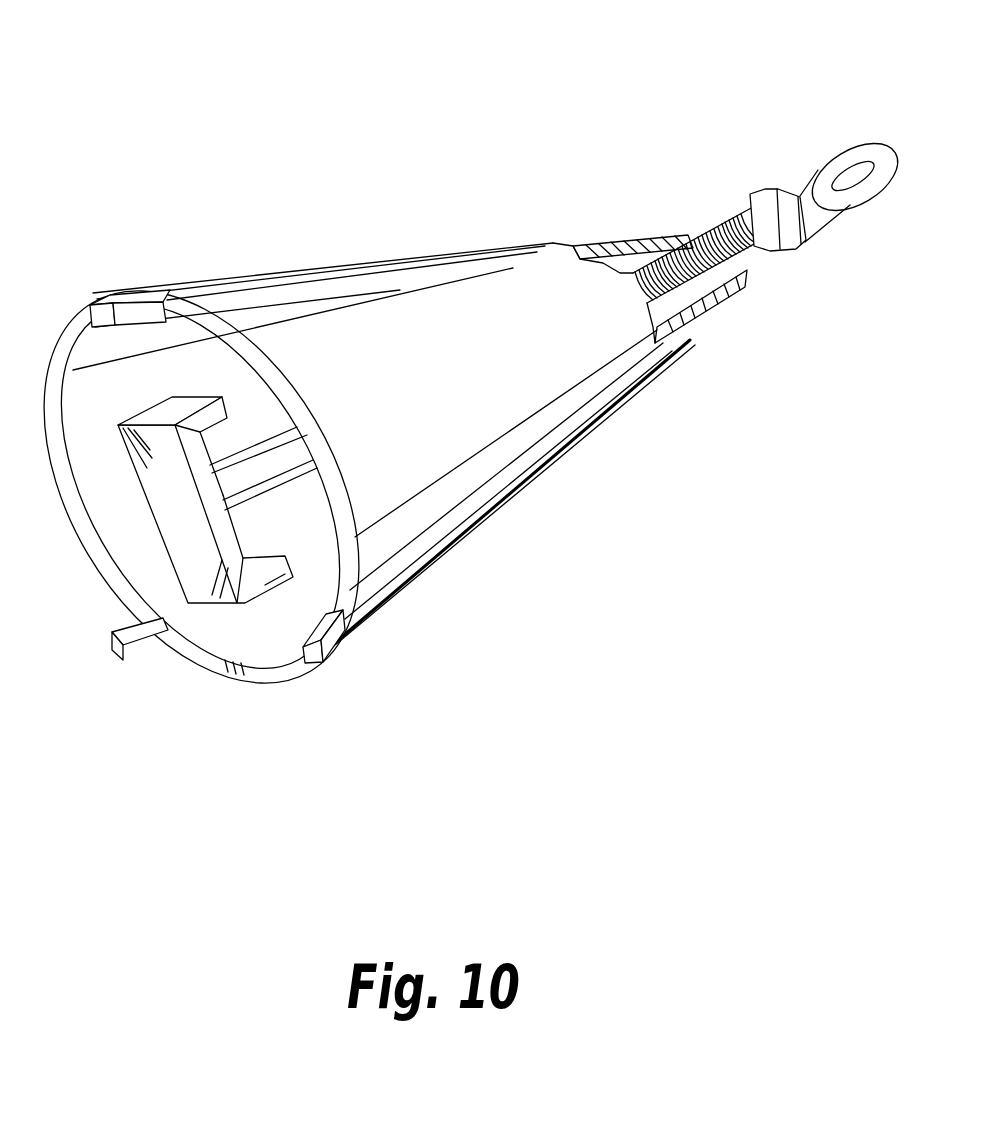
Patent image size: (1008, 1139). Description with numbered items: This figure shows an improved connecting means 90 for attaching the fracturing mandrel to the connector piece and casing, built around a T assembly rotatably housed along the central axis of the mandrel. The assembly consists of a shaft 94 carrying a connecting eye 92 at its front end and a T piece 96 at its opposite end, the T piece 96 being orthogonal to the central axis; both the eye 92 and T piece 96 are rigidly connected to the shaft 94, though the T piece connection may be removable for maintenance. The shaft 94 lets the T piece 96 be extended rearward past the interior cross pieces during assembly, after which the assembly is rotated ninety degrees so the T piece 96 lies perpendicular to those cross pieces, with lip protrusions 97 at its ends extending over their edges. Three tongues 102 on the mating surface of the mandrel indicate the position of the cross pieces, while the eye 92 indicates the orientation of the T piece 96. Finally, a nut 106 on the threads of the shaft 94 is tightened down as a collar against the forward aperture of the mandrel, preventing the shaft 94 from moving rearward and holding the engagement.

The cone body 90 is at (545, 466).
The connecting eye 92 is at (860, 200).
The shaft 94 is at (745, 219).
The T piece 96 is at (249, 555).
The lip protrusions 97 is at (280, 566).
The tongues 102 is at (133, 310).
The nut 106 is at (785, 248).